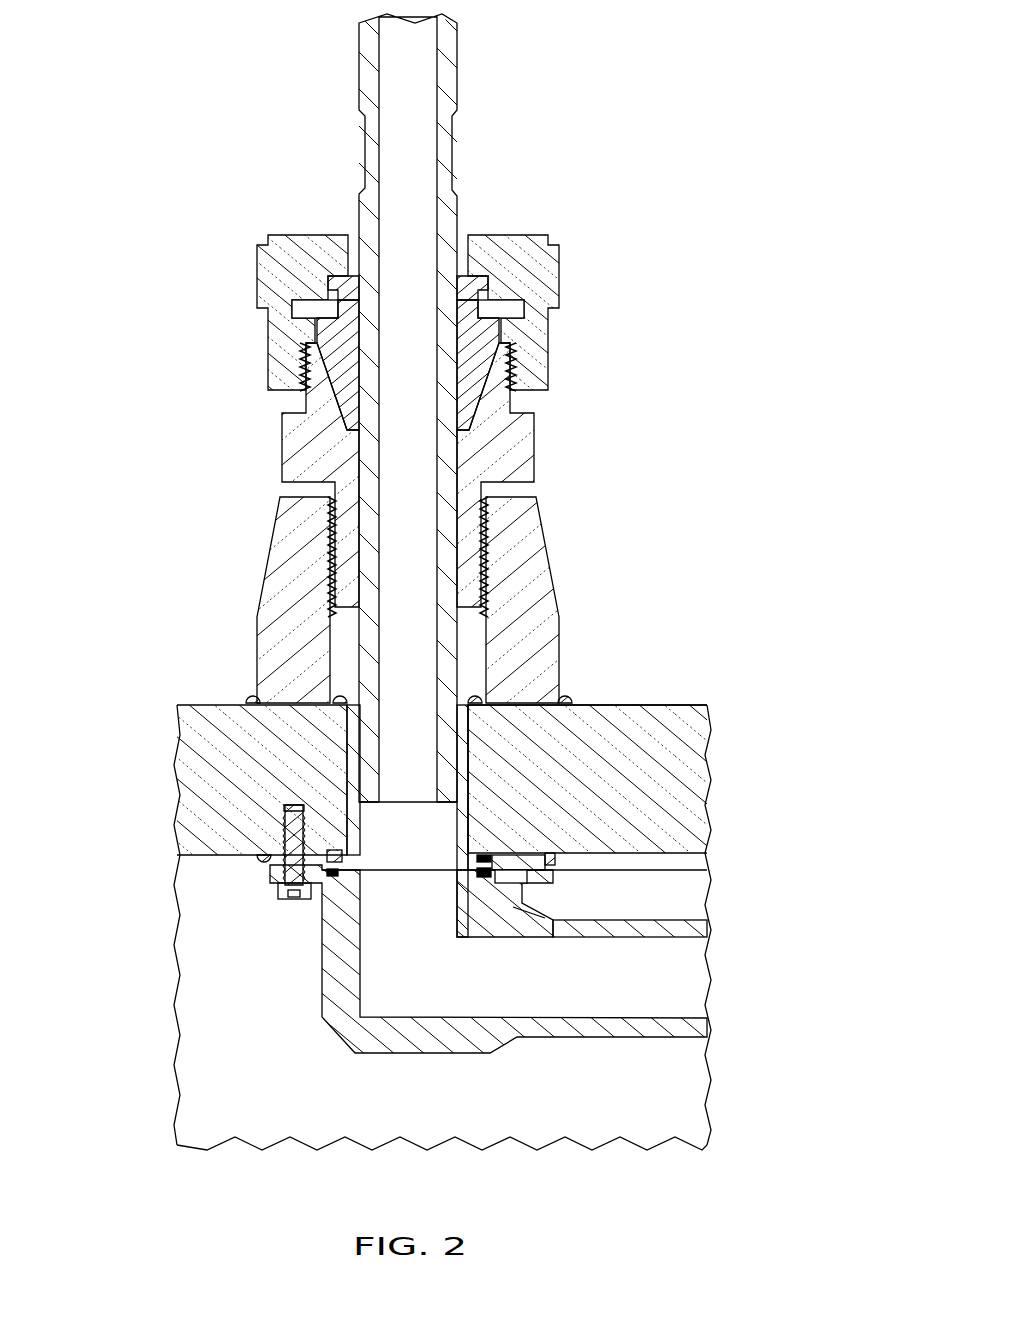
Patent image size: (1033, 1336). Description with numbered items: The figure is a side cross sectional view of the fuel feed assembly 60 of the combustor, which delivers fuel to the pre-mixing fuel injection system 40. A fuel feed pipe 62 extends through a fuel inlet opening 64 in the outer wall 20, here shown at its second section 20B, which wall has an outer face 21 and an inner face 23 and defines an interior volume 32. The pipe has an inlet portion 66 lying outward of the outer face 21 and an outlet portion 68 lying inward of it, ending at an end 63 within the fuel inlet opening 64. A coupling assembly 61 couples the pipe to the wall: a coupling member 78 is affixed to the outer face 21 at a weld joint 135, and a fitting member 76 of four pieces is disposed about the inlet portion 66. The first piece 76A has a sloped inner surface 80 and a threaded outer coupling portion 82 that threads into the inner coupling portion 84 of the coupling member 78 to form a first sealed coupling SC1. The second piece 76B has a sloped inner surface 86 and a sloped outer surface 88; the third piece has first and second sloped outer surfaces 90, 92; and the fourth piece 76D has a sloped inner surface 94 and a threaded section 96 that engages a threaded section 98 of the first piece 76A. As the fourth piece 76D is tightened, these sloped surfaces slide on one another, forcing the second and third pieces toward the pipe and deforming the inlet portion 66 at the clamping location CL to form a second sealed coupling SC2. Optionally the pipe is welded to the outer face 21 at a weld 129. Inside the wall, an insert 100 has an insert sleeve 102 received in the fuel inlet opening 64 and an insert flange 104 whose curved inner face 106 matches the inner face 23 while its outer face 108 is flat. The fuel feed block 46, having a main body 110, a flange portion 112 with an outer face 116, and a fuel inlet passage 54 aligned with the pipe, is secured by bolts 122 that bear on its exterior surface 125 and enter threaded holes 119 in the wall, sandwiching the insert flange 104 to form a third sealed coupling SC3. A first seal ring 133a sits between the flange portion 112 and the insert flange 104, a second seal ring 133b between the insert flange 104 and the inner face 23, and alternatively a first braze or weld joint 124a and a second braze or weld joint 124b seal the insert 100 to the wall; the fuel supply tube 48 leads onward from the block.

The inlet portion 66 is at (452, 66).
The fuel feed assembly 60 is at (478, 193).
The fuel feed pipe 62 is at (362, 203).
The second sloped outer surface 92 is at (333, 274).
The sloped inner surface 94 is at (355, 286).
The fourth piece 76D is at (552, 250).
The first sloped outer surface 90 is at (300, 315).
The sloped inner surface 86 is at (352, 330).
The second sealed coupling SC2 is at (458, 357).
The threaded section 96 is at (498, 355).
The clamping location CL is at (628, 282).
The threaded section 98 is at (298, 365).
The sloped outer surface 88 is at (304, 388).
The second piece 76B is at (516, 398).
The sloped inner surface 80 is at (352, 430).
The coupling assembly 61 is at (245, 473).
The first piece 76A is at (524, 455).
The fitting member 76 is at (697, 235).
The threaded outer coupling portion 82 is at (330, 520).
The coupling member 78 is at (538, 556).
The inner coupling portion 84 is at (336, 580).
The first sealed coupling SC1 is at (322, 560).
The weld 129 is at (463, 693).
The first braze or weld joint 124a is at (338, 695).
The weld joint 135 is at (250, 698).
The outer face 21 is at (604, 704).
The second section 20B is at (192, 776).
The outlet portion 68 is at (366, 768).
The insert sleeve 102 is at (468, 728).
The fuel inlet opening 64 is at (468, 792).
The inner face 106 is at (540, 852).
The outer wall 20 is at (698, 790).
The end 63 is at (430, 815).
The second braze or weld joint 124b is at (556, 856).
The threaded holes 119 is at (285, 810).
The second seal ring 133b is at (334, 850).
The interior volume 32 is at (200, 868).
The inner face 23 is at (696, 868).
The insert 100 is at (565, 868).
The first seal ring 133a is at (340, 872).
The insert flange 104 is at (518, 900).
The third sealed coupling SC3 is at (256, 872).
The flange portion 112 is at (262, 860).
The outer face 116 is at (300, 899).
The bolt 122 is at (288, 899).
The fuel inlet passage 54 is at (362, 942).
The exterior surface 125 is at (450, 1053).
The outer face 108 is at (556, 937).
The fuel feed block 46 is at (322, 1010).
The pre-mixing fuel injection system 40 is at (340, 1038).
The main body 110 is at (395, 1053).
The fuel supply tube 48 is at (598, 1037).